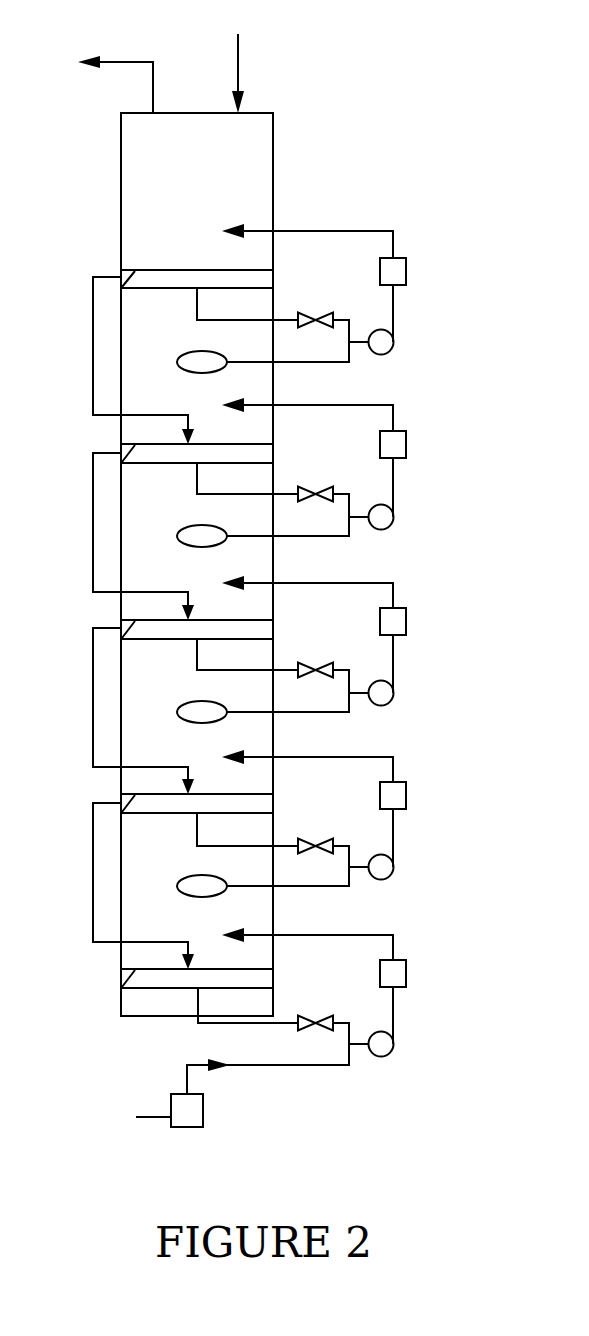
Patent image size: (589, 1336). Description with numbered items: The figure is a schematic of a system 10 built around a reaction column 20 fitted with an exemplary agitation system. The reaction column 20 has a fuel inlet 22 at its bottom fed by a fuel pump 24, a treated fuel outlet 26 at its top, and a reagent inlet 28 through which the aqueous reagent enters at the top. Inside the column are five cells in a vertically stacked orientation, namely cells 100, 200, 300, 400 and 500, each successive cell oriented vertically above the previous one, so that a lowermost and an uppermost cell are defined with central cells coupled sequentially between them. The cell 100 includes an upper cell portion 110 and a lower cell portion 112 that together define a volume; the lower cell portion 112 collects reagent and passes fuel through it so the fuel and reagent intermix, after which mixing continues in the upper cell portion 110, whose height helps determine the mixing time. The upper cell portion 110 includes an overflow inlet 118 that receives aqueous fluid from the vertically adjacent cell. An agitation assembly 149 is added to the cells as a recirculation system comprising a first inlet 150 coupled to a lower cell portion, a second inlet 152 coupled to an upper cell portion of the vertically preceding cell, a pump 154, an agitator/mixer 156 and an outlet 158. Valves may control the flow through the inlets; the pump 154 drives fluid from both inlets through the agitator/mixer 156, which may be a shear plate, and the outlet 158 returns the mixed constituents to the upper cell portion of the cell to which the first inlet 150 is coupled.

The reaction system 10 is at (342, 107).
The reaction column 20 is at (342, 175).
The fuel inlet 22 is at (187, 1080).
The fuel pump 24 is at (183, 1113).
The treated fuel outlet 26 is at (126, 60).
The reagent inlet 28 is at (238, 68).
The cell 100 is at (249, 894).
The upper cell portion 110 is at (116, 836).
The lower cell portion 112 is at (121, 980).
The overflow inlet 118 is at (93, 870).
The agitation assembly 149 is at (333, 831).
The first inlet 150 is at (293, 846).
The second inlet 152 is at (320, 887).
The pump 154 is at (394, 867).
The agitator/mixer 156 is at (406, 795).
The outlet 158 is at (318, 757).
The cell 200 is at (94, 701).
The cell 300 is at (94, 523).
The cell 400 is at (94, 345).
The cell 500 is at (94, 222).